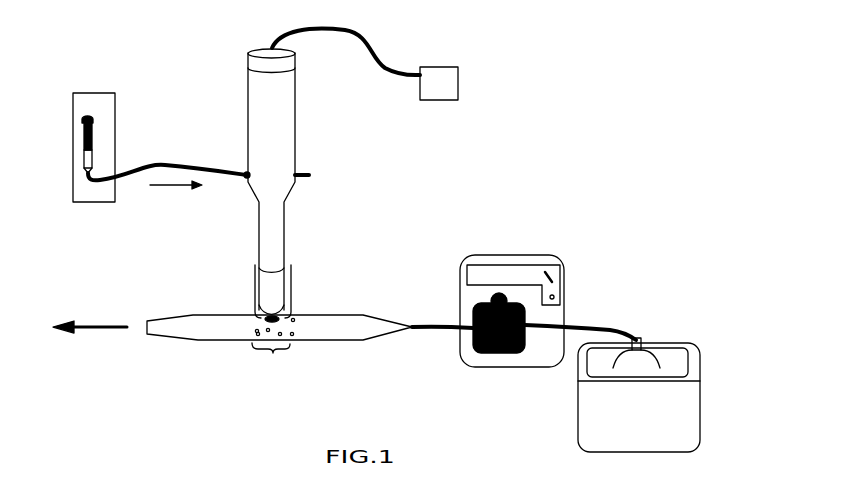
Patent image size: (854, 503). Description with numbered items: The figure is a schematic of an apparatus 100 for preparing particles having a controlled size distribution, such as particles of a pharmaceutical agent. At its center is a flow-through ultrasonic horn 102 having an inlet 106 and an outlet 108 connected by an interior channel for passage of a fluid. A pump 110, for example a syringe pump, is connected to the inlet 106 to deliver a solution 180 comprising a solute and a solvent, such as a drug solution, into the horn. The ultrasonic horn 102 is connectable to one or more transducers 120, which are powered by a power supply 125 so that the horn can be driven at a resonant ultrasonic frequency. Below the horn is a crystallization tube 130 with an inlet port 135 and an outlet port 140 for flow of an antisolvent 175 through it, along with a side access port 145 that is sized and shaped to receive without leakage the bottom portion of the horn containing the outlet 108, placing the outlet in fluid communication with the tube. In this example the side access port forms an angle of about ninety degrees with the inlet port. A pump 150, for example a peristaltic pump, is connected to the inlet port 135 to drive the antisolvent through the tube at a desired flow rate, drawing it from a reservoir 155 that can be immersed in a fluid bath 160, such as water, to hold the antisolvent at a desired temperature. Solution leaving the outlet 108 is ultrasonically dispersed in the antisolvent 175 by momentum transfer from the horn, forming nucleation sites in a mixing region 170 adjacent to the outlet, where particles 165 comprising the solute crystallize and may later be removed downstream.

The apparatus 100 is at (503, 52).
The flow-through ultrasonic horn 102 is at (297, 110).
The inlet 106 is at (245, 173).
The outlet 108 is at (283, 318).
The pump 110 is at (115, 130).
The transducers 120 is at (296, 63).
The power supply 125 is at (450, 100).
The crystallization tube 130 is at (338, 342).
The inlet port 135 is at (412, 326).
The outlet port 140 is at (147, 334).
The side access port 145 is at (292, 272).
The pump 150 is at (545, 255).
The reservoir 155 is at (650, 352).
The fluid bath 160 is at (578, 432).
The particles 165 is at (281, 336).
The mixing region 170 is at (273, 353).
The antisolvent 175 is at (430, 332).
The solution 180 is at (84, 152).